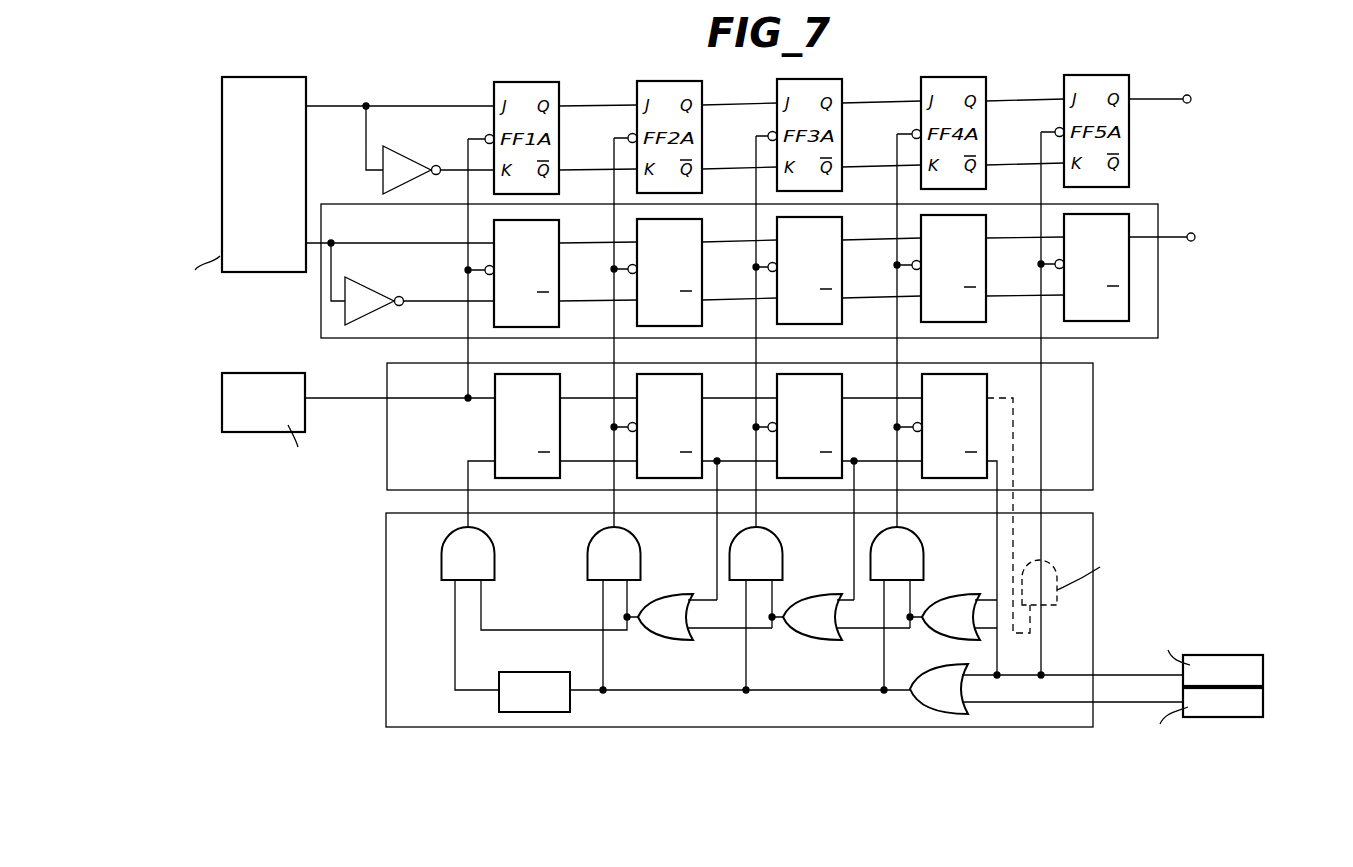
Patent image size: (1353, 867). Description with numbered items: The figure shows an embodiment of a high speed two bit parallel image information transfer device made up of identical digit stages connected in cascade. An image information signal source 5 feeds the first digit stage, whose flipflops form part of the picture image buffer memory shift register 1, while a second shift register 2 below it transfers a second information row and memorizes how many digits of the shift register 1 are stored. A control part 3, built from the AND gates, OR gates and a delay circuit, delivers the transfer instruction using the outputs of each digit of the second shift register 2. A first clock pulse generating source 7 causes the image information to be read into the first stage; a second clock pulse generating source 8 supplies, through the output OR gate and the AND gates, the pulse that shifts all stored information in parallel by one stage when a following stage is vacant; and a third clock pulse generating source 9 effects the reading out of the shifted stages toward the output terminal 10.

The picture image buffer memory shift register 1 is at (1147, 195).
The second shift register 2 is at (1093, 392).
The control part 3 is at (1093, 517).
The image information signal source 5 is at (306, 93).
The first clock pulse generating source 7 is at (279, 386).
The second clock pulse generating source 8 is at (1263, 700).
The third clock pulse generating source 9 is at (1263, 669).
The output terminal 10 is at (1187, 104).